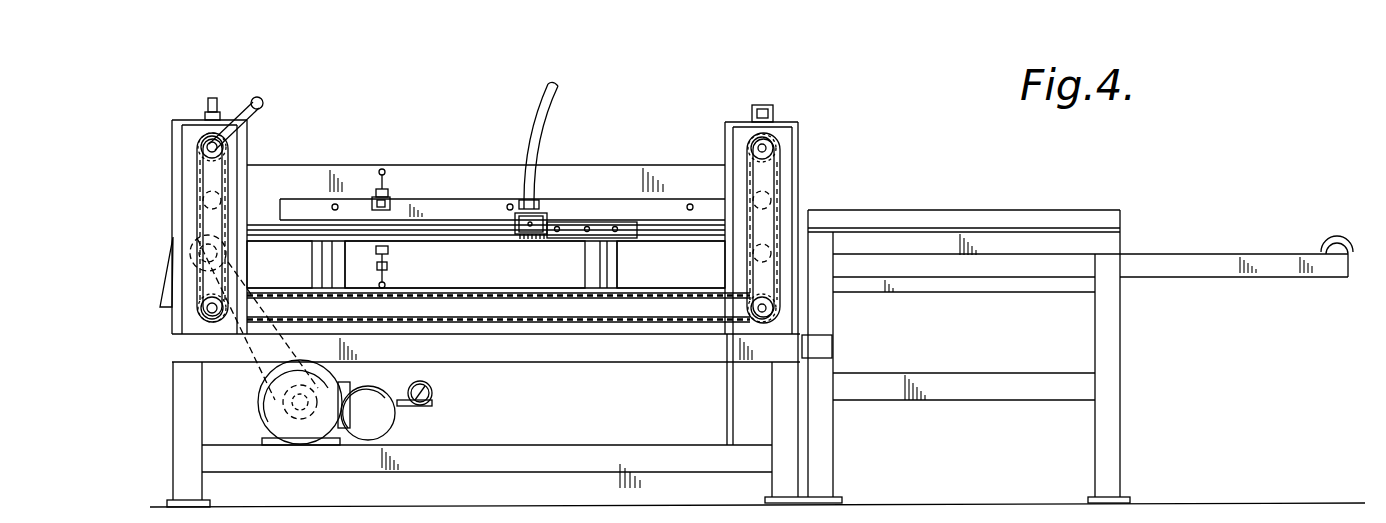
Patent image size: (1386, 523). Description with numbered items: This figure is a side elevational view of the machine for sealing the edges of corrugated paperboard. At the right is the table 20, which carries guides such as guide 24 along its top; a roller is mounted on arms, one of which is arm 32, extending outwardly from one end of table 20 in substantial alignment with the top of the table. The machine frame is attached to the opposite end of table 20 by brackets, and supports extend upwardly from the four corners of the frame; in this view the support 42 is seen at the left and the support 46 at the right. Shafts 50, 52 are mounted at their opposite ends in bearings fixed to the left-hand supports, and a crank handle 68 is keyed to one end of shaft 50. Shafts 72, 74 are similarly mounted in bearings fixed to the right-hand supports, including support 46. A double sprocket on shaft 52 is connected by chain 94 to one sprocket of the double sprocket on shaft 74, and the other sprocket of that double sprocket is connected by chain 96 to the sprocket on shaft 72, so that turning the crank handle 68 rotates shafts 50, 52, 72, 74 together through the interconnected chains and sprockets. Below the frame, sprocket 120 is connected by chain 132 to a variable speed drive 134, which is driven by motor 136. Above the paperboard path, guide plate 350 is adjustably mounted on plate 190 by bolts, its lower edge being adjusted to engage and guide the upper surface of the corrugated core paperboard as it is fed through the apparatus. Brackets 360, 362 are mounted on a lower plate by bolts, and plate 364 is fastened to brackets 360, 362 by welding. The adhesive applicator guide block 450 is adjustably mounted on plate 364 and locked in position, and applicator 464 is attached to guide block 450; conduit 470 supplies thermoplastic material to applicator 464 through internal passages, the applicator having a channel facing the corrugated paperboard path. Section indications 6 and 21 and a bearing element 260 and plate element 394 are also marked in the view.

The table 20 is at (262, 73).
The section view direction 21 is at (722, 68).
The section line 6- 6 is at (668, 132).
The guide 24 is at (1050, 185).
The arm 32 is at (1210, 277).
The support 42 is at (172, 144).
The support 46 is at (800, 140).
The shaft 50 is at (194, 134).
The shaft 52 is at (200, 315).
The crank handle 68 is at (263, 102).
The shaft 72 is at (770, 153).
The shaft 74 is at (770, 312).
The chain 94 is at (674, 325).
The chain 96 is at (782, 194).
The sprocket 120 is at (184, 264).
The chain 132 is at (257, 319).
The variable speed drive 134 is at (300, 445).
The motor 136 is at (396, 425).
The plate 190 is at (337, 148).
The bearing block 260 is at (774, 104).
The guide plate 350 is at (330, 186).
The bracket 360 is at (612, 258).
The bracket 362 is at (316, 268).
The plate 364 is at (400, 240).
The mounting plate 394 is at (568, 238).
The adhesive applicator guide block 450 is at (545, 200).
The applicator 464 is at (520, 200).
The conduit 470 is at (548, 85).